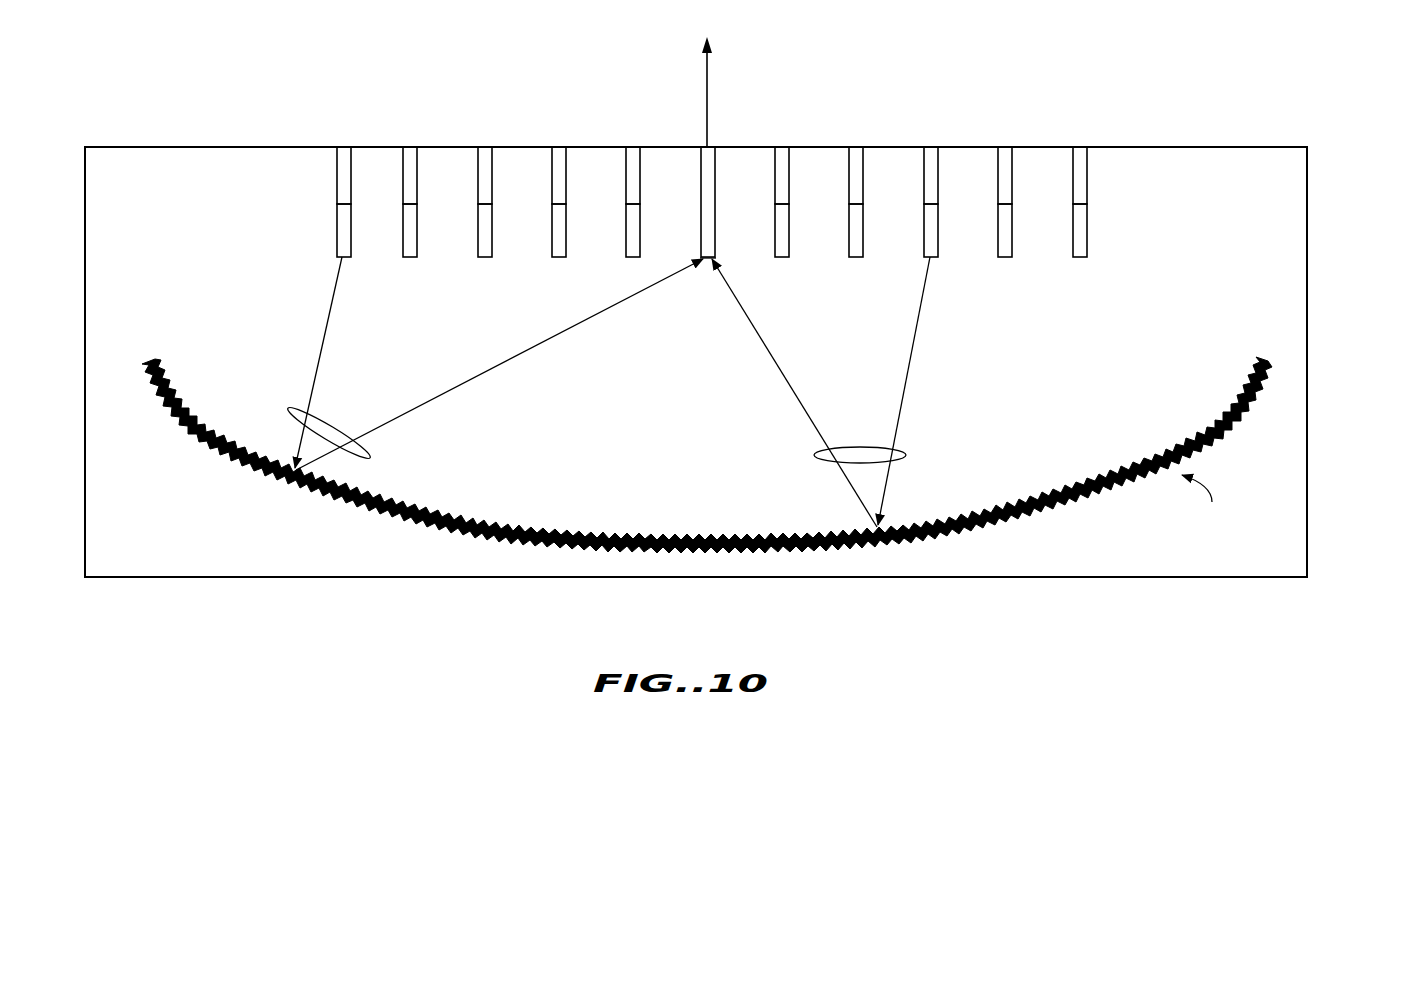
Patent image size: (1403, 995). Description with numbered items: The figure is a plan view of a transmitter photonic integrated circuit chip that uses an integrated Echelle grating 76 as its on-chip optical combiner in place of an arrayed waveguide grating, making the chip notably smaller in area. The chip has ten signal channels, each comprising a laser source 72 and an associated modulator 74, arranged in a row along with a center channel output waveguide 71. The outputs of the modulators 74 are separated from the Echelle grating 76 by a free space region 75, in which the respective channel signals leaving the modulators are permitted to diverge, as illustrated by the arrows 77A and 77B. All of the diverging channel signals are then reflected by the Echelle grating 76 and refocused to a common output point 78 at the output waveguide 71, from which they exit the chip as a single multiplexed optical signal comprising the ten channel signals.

The center channel output waveguide 71 is at (705, 180).
The laser sources 72 is at (337, 184).
The modulators 74 is at (343, 237).
The free space region 75 is at (1050, 341).
The Echelle grating 76 is at (158, 294).
The arrow 77A is at (906, 455).
The arrow 77B is at (372, 458).
The common output point 78 is at (706, 262).